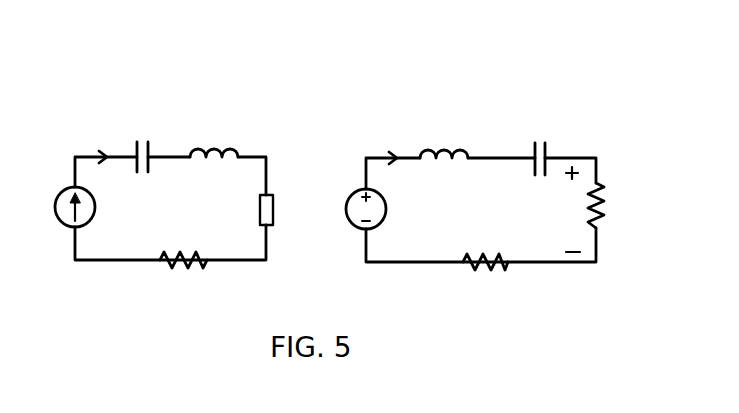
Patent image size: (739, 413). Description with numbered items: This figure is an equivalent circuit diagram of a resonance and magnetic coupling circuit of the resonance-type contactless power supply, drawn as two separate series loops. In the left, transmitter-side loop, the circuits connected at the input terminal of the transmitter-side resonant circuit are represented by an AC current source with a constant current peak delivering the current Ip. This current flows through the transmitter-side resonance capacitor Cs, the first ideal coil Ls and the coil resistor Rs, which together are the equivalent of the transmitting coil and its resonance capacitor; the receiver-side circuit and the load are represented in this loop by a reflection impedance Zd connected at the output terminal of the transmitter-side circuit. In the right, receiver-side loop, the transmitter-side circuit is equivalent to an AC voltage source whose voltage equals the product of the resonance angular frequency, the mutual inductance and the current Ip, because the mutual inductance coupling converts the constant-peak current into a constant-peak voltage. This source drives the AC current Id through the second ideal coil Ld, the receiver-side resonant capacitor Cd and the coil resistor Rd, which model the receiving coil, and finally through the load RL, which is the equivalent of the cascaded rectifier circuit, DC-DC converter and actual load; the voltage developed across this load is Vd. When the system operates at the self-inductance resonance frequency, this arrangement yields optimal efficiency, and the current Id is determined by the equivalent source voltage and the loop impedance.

The AC current source Ip is at (83, 173).
The transmitter-side resonance capacitor Cs is at (140, 146).
The first ideal coil Ls is at (214, 138).
The reflection impedance Zd is at (281, 210).
The coil resistor Rs is at (183, 247).
The AC current Id is at (394, 142).
The second ideal coil Ld is at (444, 139).
The receiver-side resonant capacitor Cd is at (539, 147).
The load RL is at (612, 205).
The load voltage Vd is at (564, 209).
The coil resistor Rd is at (485, 249).